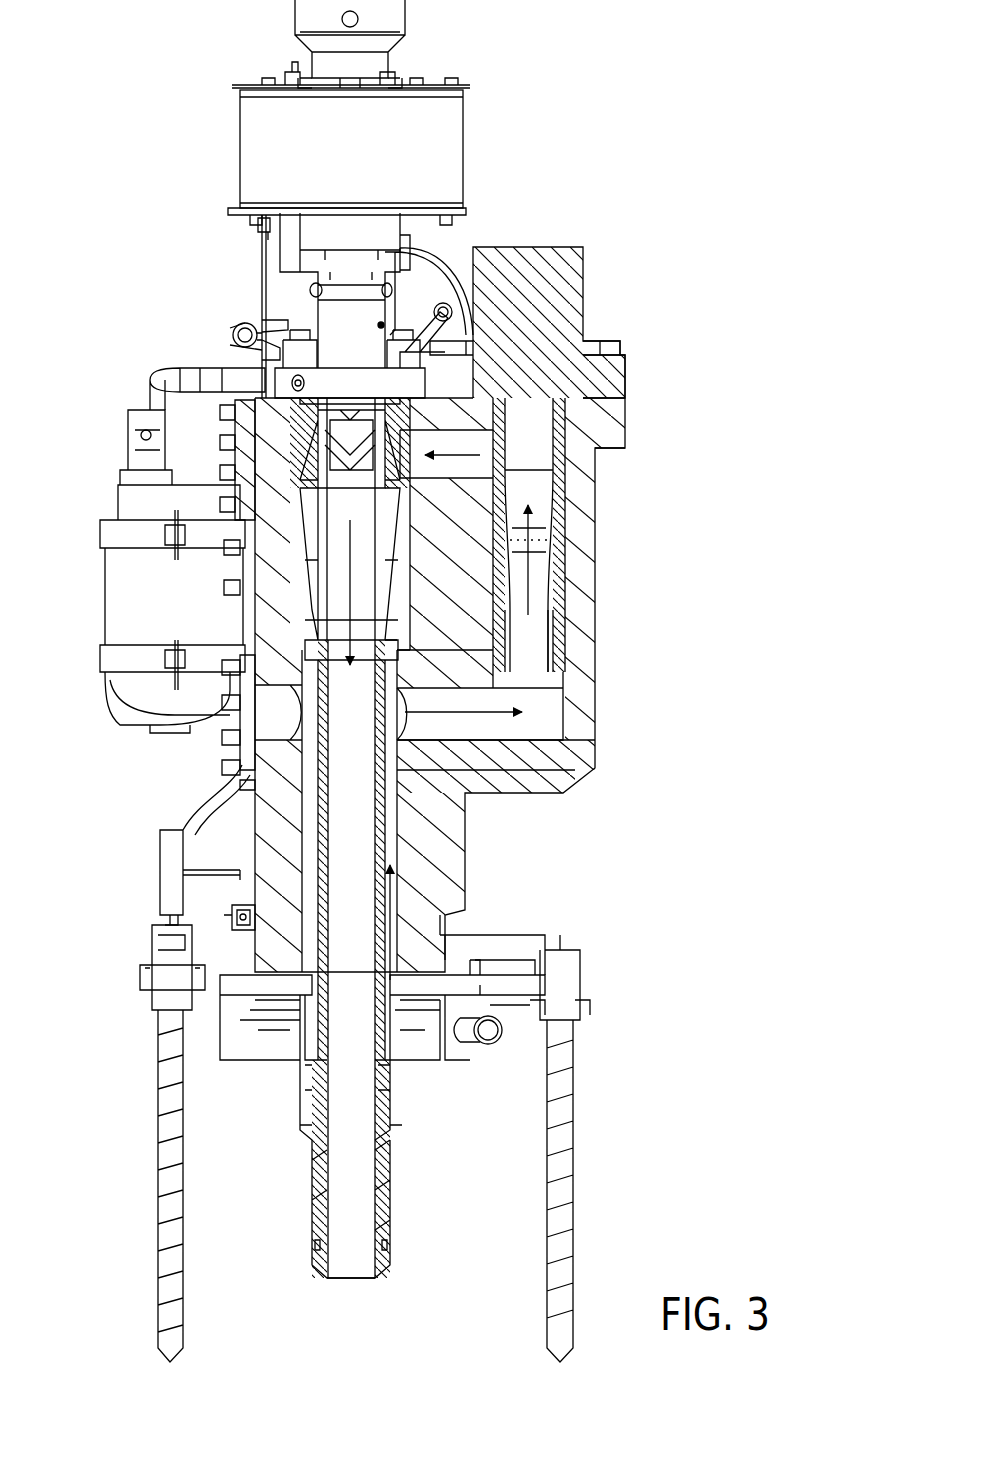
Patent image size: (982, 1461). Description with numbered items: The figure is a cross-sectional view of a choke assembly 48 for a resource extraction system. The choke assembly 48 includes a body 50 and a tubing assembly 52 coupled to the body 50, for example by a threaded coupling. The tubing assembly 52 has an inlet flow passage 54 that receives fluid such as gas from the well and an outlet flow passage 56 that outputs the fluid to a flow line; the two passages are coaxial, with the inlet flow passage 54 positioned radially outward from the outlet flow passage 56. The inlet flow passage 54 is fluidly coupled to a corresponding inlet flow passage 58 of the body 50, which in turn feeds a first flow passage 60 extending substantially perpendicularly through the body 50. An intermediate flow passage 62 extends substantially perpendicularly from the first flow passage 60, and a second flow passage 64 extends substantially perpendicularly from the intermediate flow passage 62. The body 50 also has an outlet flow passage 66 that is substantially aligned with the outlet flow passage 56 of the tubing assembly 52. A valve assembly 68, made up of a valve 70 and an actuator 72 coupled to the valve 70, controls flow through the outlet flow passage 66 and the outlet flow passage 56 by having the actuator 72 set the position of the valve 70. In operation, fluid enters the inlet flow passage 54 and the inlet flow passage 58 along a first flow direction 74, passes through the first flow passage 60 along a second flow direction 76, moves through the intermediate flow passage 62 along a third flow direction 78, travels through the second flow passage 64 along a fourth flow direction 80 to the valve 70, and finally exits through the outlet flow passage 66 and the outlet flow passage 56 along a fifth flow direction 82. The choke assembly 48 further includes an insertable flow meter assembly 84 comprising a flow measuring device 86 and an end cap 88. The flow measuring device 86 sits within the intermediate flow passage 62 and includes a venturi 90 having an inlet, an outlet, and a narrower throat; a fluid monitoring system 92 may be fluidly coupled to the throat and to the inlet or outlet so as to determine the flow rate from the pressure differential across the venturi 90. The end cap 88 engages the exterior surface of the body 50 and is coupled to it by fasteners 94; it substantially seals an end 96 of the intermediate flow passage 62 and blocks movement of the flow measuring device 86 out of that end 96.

The choke assembly 48 is at (615, 660).
The body 50 is at (580, 762).
The tubing assembly 52 is at (405, 1140).
The inlet flow passage 54 is at (387, 1092).
The outlet flow passage 56 is at (330, 1210).
The inlet flow passage 58 is at (495, 1025).
The first flow passage 60 is at (433, 740).
The intermediate flow passage 62 is at (555, 570).
The second flow passage 64 is at (452, 448).
The outlet flow passage 66 is at (370, 545).
The valve assembly 68 is at (216, 333).
The valve 70 is at (330, 448).
The actuator 72 is at (465, 148).
The first flow direction 74 is at (392, 915).
The second flow direction 76 is at (459, 708).
The third flow direction 78 is at (525, 565).
The fourth flow direction 80 is at (475, 455).
The fifth flow direction 82 is at (382, 590).
The insertable flow meter assembly 84 is at (645, 290).
The flow measuring device 86 is at (560, 508).
The end cap 88 is at (605, 378).
The venturi 90 is at (535, 605).
The fluid monitoring system 92 is at (112, 505).
The fasteners 94 is at (605, 343).
The end 96 is at (532, 385).